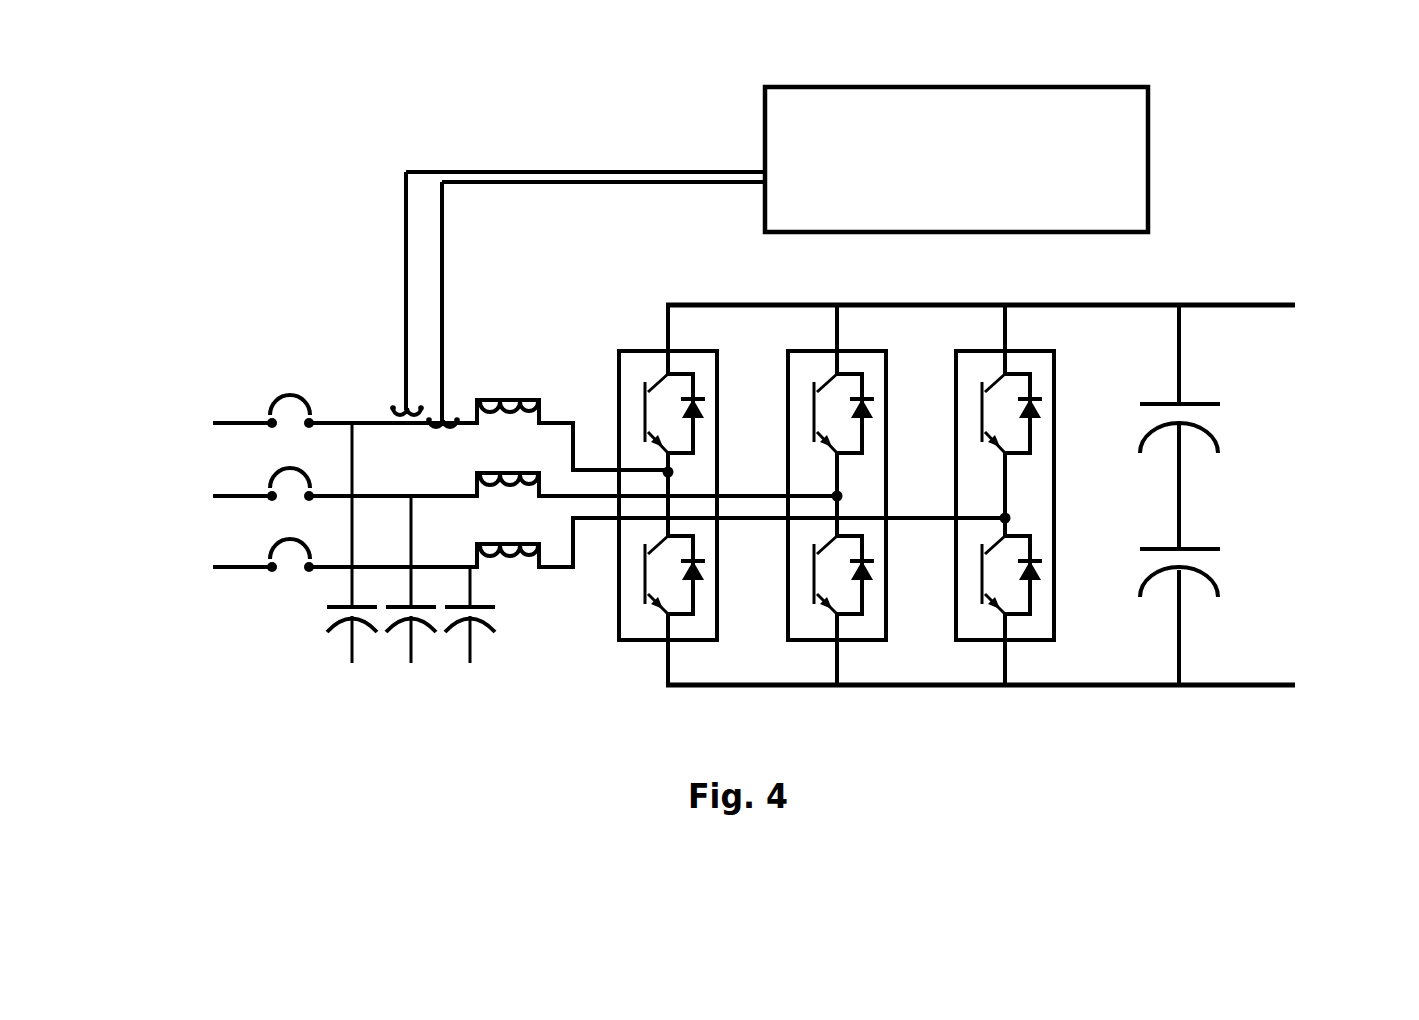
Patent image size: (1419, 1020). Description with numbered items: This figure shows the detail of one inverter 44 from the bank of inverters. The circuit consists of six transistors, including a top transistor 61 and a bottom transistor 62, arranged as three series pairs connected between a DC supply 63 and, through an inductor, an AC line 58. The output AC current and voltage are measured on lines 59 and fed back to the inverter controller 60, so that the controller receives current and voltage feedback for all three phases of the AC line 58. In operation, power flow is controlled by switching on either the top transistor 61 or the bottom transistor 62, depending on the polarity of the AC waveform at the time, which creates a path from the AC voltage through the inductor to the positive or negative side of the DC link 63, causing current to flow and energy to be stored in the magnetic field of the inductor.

The inverter 44 is at (1413, 72).
The AC line 58 is at (197, 405).
The measurement lines 59 is at (398, 315).
The inverter controller 60 is at (1155, 213).
The top transistor 61 is at (1037, 440).
The bottom transistor 62 is at (1037, 592).
The DC supply 63 is at (1252, 315).